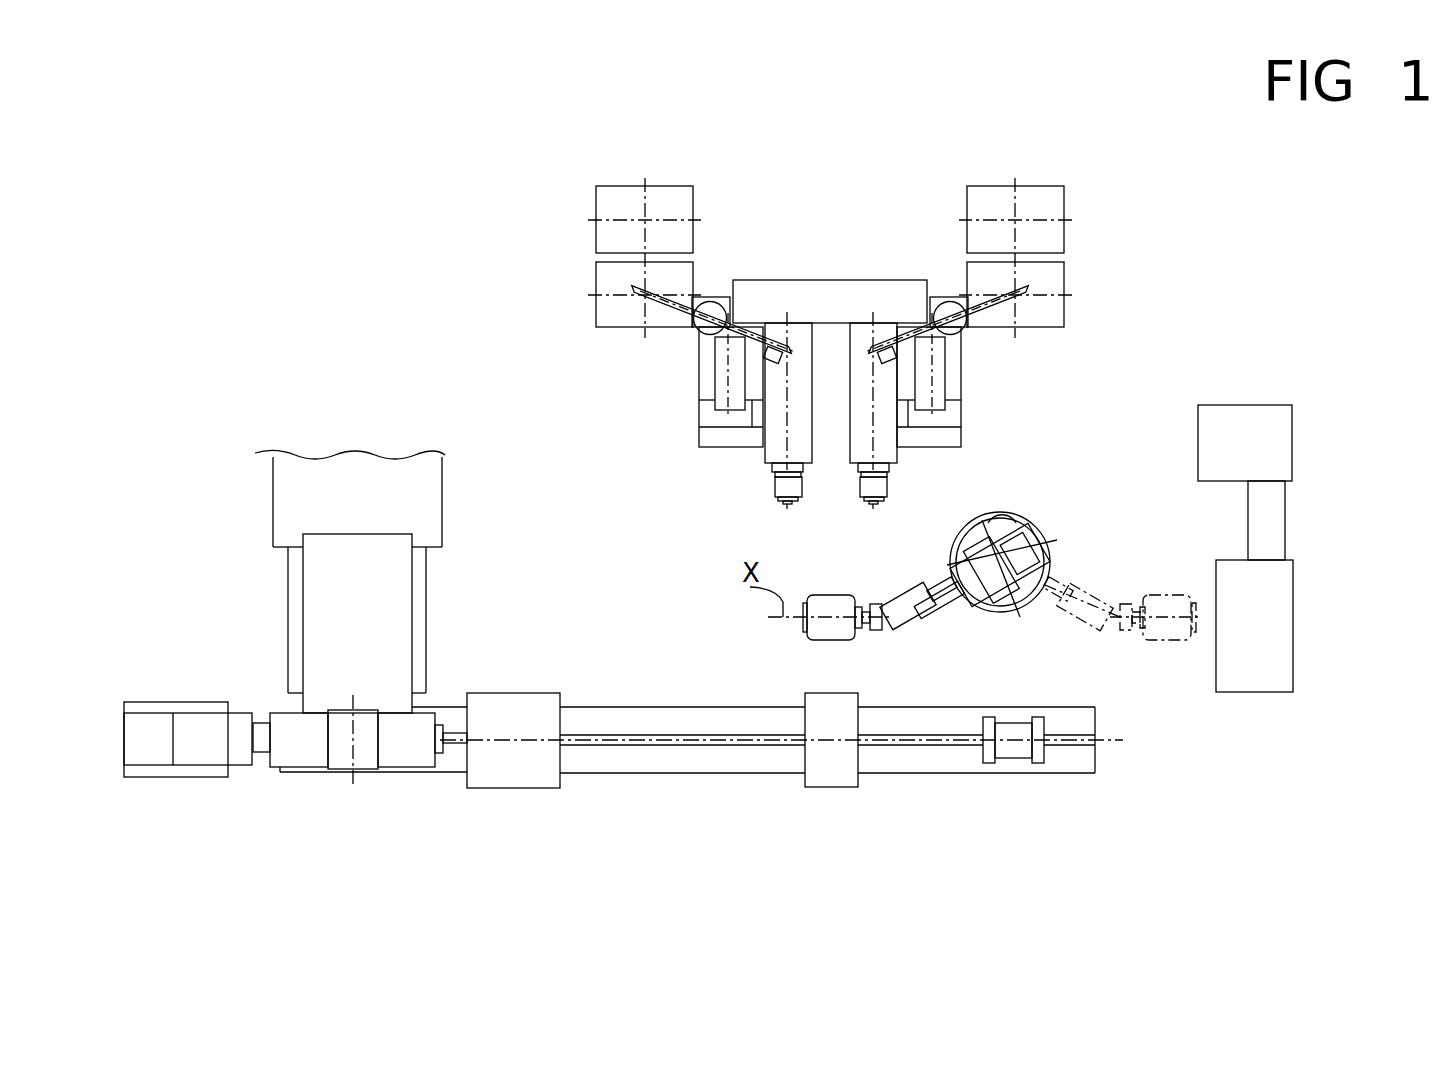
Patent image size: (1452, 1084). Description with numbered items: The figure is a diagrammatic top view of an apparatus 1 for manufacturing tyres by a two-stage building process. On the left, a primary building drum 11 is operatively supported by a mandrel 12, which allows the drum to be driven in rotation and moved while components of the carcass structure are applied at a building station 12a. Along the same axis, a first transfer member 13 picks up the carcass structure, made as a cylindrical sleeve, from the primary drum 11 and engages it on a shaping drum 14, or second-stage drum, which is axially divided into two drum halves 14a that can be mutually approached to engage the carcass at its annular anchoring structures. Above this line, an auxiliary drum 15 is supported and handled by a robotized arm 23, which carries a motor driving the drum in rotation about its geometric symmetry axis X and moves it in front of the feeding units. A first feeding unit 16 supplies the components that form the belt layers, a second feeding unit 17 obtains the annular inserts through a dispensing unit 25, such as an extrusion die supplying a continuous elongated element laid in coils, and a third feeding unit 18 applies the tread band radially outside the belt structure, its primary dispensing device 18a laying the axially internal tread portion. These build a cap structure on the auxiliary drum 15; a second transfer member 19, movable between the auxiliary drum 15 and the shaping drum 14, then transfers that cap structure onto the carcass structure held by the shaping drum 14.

The apparatus for manufacturing tyres 1 is at (426, 281).
The primary building drum 11 is at (345, 749).
The mandrel 12 is at (263, 746).
The building station 12a is at (266, 571).
The first transfer member 13 is at (505, 770).
The shaping drum 14 is at (1015, 754).
The drum halves 14a is at (990, 764).
The auxiliary drum 15 is at (853, 598).
The first feeding unit 16 is at (1268, 647).
The second feeding unit 17 is at (910, 487).
The third feeding unit 18 is at (772, 485).
The primary dispensing device 18a is at (788, 504).
The second transfer member 19 is at (847, 776).
The robotized arm 23 is at (1003, 605).
The dispensing unit 25 is at (873, 504).